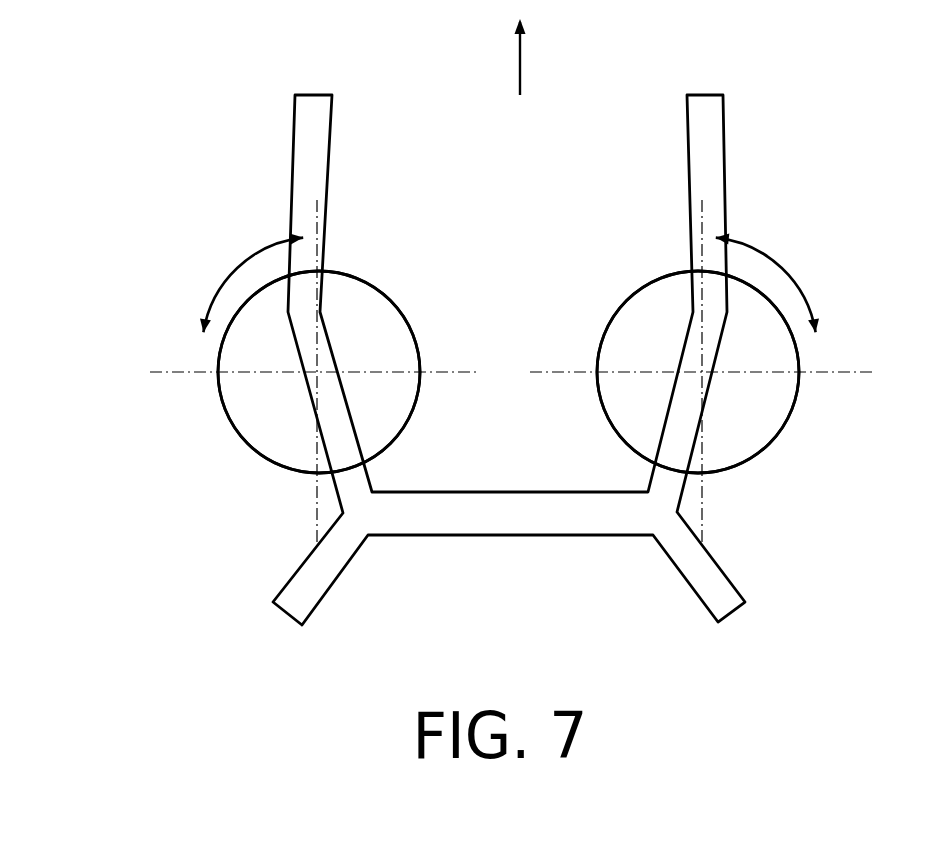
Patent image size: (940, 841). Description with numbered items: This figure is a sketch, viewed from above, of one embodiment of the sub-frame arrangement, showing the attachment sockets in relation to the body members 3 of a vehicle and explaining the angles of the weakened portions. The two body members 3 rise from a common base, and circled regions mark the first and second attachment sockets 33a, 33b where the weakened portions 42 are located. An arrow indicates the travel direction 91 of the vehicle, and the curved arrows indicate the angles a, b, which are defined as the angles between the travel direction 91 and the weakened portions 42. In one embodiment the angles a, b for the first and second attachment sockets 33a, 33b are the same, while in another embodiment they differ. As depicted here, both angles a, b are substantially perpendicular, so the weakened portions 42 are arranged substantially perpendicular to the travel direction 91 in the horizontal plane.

The body member 3 is at (312, 143).
The weakened portion 42 is at (218, 355).
The first attachment socket 33a is at (237, 437).
The second attachment socket 33b is at (777, 442).
The angle a is at (228, 270).
The angle b is at (790, 262).
The travel direction 91 is at (522, 76).